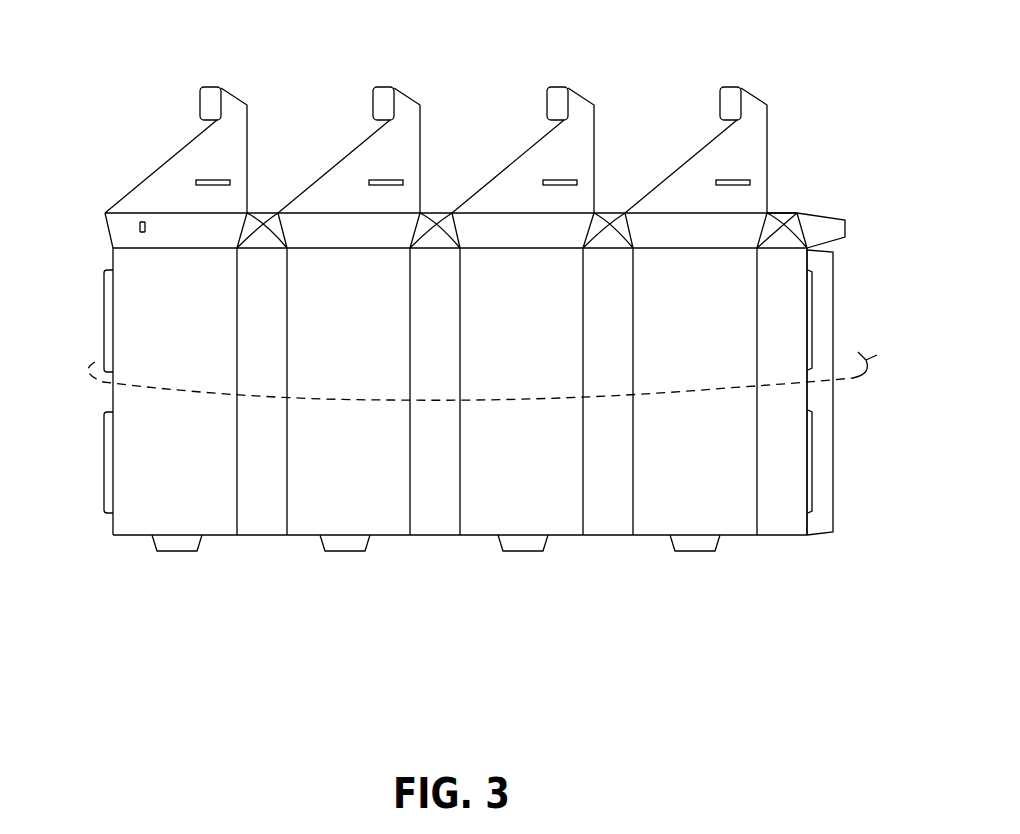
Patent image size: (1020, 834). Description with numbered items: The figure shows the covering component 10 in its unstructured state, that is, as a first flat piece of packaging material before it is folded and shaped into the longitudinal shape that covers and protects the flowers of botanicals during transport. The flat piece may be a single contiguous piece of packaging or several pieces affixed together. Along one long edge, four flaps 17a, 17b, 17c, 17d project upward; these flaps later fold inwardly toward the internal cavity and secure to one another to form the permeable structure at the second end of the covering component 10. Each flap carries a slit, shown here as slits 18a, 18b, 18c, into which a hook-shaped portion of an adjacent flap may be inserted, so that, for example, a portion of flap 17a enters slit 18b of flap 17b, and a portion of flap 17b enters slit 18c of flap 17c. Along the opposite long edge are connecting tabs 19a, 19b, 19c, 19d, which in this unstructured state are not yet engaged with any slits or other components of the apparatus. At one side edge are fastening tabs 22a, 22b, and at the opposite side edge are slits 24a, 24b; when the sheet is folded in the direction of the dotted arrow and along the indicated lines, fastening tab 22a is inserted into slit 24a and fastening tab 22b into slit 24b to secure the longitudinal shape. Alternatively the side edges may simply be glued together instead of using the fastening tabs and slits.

The covering component 10 is at (123, 153).
The flap 17a is at (232, 120).
The flap 17b is at (405, 120).
The flap 17c is at (579, 120).
The flap 17d is at (752, 120).
The slit 18a is at (218, 180).
The slit 18b is at (391, 180).
The slit 18c is at (565, 180).
The connecting tab 19a is at (172, 551).
The connecting tab 19b is at (340, 551).
The connecting tab 19c is at (520, 551).
The connecting tab 19d is at (693, 551).
The fastening tab 22a is at (103, 325).
The fastening tab 22b is at (103, 462).
The slit 24a is at (812, 305).
The slit 24b is at (812, 448).